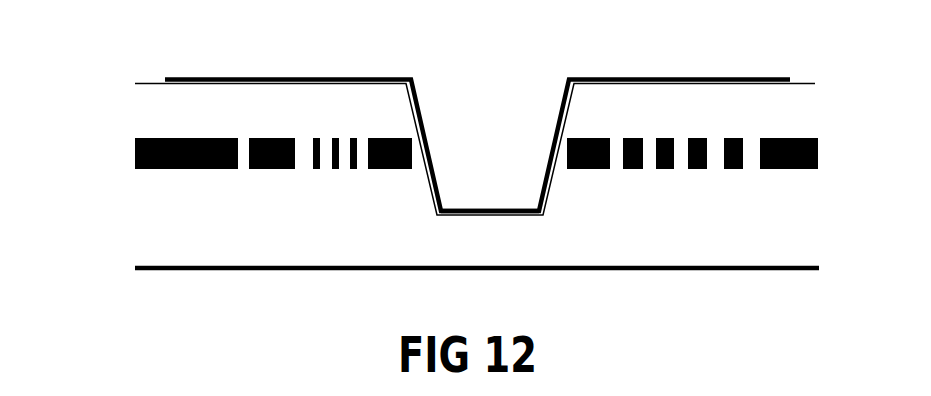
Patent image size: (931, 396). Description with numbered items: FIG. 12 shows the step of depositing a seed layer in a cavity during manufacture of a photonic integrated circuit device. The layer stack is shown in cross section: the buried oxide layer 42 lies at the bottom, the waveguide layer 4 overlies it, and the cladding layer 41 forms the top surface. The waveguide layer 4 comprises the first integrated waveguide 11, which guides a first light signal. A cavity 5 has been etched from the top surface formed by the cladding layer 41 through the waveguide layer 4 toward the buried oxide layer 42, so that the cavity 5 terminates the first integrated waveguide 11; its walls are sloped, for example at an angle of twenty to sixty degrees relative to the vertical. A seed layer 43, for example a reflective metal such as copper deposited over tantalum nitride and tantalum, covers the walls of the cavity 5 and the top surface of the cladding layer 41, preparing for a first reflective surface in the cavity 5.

The waveguide layer 4 is at (431, 104).
The cavity 5 is at (509, 81).
The first integrated waveguide 11 is at (210, 136).
The cladding layer 41 is at (110, 118).
The buried oxide layer 42 is at (118, 236).
The seed layer 43 is at (422, 122).